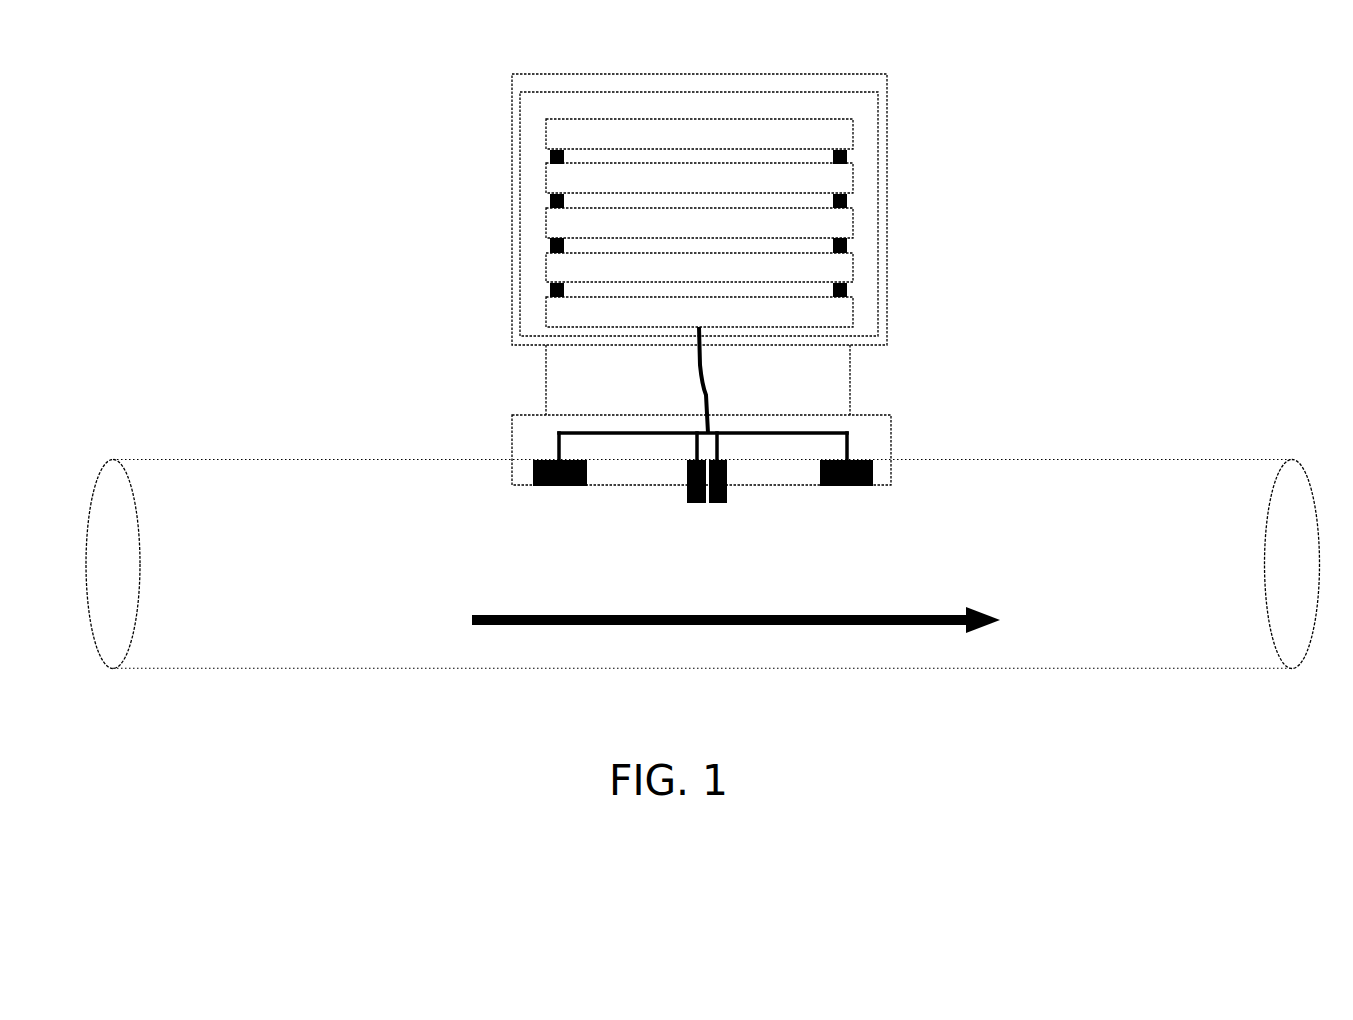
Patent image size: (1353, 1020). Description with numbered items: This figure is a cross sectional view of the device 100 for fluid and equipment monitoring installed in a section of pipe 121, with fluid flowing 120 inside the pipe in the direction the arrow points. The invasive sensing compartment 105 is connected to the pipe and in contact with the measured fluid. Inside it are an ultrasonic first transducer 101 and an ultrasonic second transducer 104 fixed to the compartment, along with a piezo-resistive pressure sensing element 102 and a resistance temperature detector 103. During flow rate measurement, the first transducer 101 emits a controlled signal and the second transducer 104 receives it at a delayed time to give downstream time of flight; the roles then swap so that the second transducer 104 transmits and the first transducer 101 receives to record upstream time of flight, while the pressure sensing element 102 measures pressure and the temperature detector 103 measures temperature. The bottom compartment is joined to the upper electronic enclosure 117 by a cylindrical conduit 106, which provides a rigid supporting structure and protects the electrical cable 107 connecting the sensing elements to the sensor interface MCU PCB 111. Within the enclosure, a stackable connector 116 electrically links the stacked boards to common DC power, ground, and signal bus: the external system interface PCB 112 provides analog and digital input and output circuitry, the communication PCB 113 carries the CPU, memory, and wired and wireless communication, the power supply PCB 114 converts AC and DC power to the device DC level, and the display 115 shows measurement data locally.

The device 100 is at (512, 147).
The ultrasonic first transducer 101 is at (560, 487).
The piezo-resistive pressure sensing element 102 is at (698, 507).
The resistance temperature detector 103 is at (713, 507).
The ultrasonic second transducer 104 is at (853, 487).
The invasive sensing compartment 105 is at (893, 452).
The cylindrical conduit 106 is at (852, 382).
The cable 107 is at (700, 402).
The sensor interface MCU PCB 111 is at (842, 317).
The external system interface PCB 112 is at (838, 267).
The communication PCB 113 is at (843, 225).
The power supply PCB 114 is at (843, 182).
The display 115 is at (838, 133).
The stackable connector 116 is at (547, 292).
The upper electronic enclosure 117 is at (512, 237).
The fluid flowing 120 is at (470, 620).
The pipe 121 is at (310, 458).